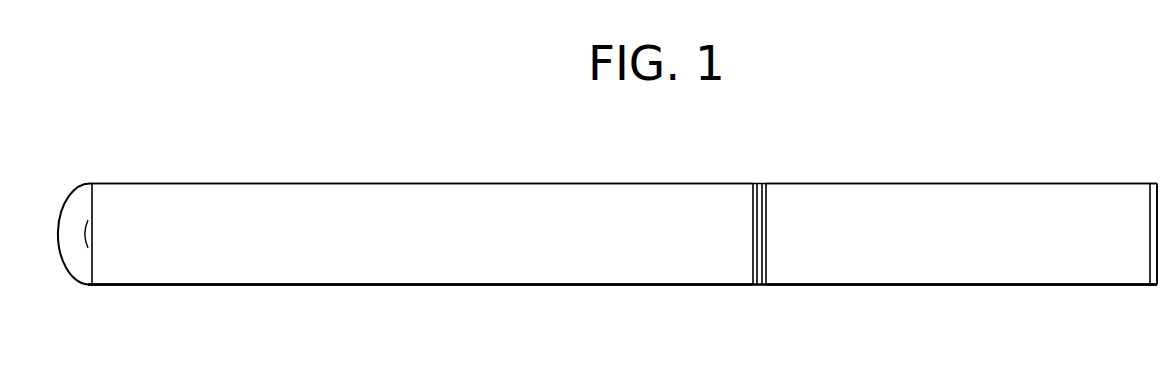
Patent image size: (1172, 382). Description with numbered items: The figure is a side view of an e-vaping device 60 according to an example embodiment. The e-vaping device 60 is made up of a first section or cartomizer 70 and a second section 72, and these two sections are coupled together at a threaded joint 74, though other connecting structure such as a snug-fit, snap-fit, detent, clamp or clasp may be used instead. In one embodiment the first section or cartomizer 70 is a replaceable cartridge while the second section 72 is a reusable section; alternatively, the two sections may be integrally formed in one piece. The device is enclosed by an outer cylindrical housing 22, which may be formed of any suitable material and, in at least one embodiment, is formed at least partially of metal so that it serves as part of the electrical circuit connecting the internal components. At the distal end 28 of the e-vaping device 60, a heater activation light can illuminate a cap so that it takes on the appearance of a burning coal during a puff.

The outer cylindrical housing 22 is at (295, 288).
The distal end 28 is at (108, 172).
The e-vaping device 60 is at (835, 175).
The first section or cartomizer 70 is at (1032, 183).
The second section 72 is at (652, 183).
The threaded joint 74 is at (750, 300).